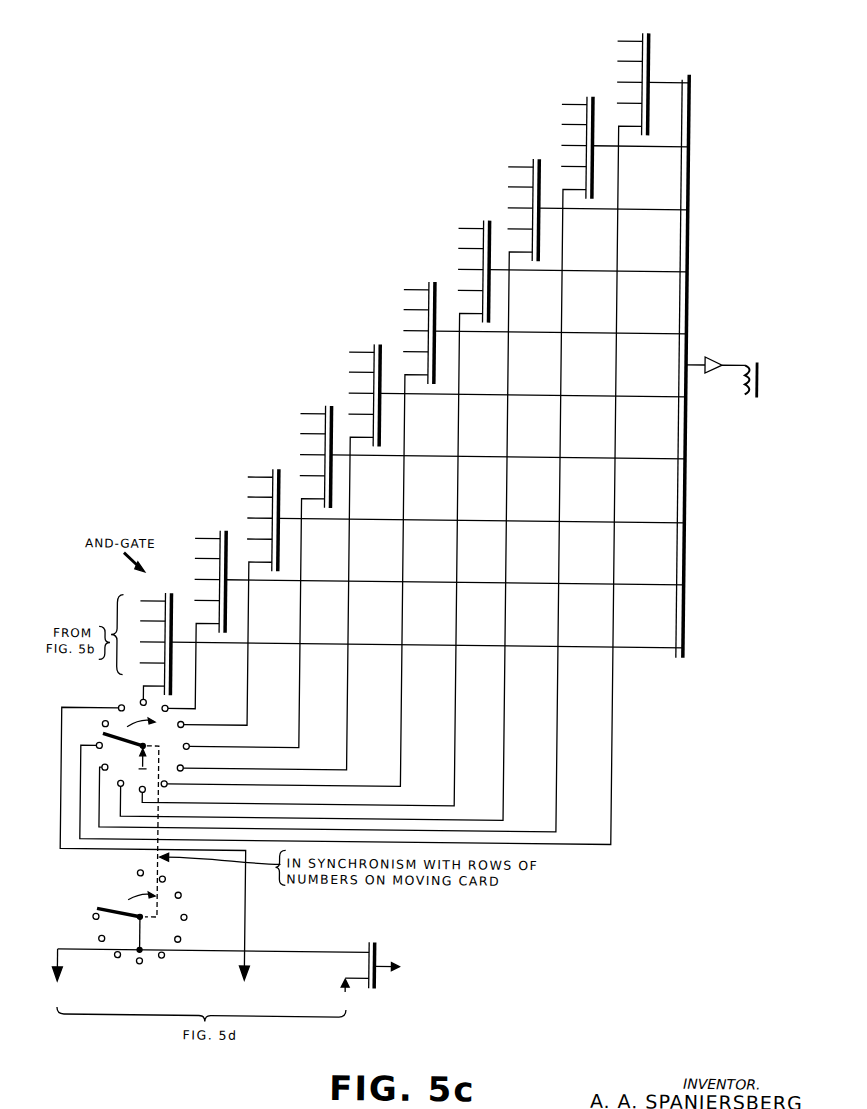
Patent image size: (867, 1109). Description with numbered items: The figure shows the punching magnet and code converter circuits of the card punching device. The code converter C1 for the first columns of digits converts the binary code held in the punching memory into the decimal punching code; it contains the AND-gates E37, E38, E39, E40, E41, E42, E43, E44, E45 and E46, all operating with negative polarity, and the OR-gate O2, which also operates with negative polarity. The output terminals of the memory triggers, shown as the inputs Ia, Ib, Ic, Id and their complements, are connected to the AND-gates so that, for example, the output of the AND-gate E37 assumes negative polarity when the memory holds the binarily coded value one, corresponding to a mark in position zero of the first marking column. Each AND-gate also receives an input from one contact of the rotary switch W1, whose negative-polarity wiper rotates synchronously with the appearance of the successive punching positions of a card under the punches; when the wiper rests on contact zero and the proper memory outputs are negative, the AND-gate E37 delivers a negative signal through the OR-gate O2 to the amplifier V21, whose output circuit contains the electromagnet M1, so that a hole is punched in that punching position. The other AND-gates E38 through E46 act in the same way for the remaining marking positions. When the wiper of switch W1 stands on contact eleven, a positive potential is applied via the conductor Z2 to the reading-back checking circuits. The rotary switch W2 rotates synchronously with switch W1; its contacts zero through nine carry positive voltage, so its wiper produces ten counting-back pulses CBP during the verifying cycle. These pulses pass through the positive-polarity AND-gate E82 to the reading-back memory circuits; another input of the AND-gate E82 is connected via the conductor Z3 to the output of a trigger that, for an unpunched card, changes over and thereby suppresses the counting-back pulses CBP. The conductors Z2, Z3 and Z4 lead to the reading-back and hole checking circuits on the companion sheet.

The code converter C1 is at (216, 188).
The AND-gate E37 is at (166, 596).
The AND-gate E38 is at (220, 533).
The AND-gate E39 is at (272, 471).
The AND-gate E40 is at (324, 407).
The AND-gate E41 is at (372, 345).
The AND-gate E42 is at (426, 282).
The AND-gate E43 is at (480, 220).
The AND-gate E44 is at (529, 158).
The AND-gate E45 is at (582, 95).
The AND-gate E46 is at (637, 31).
The OR-gate O2 is at (690, 94).
The amplifier V21 is at (715, 358).
The electromagnet M1 is at (749, 408).
The rotary switch W1 is at (120, 704).
The rotary switch W2 is at (122, 904).
The AND-gate E82 is at (366, 927).
The counting-back pulses CBP is at (423, 968).
The conductor Z2 is at (155, 857).
The conductor Z3 is at (343, 993).
The lead to Fig. 5d Z4 is at (53, 977).